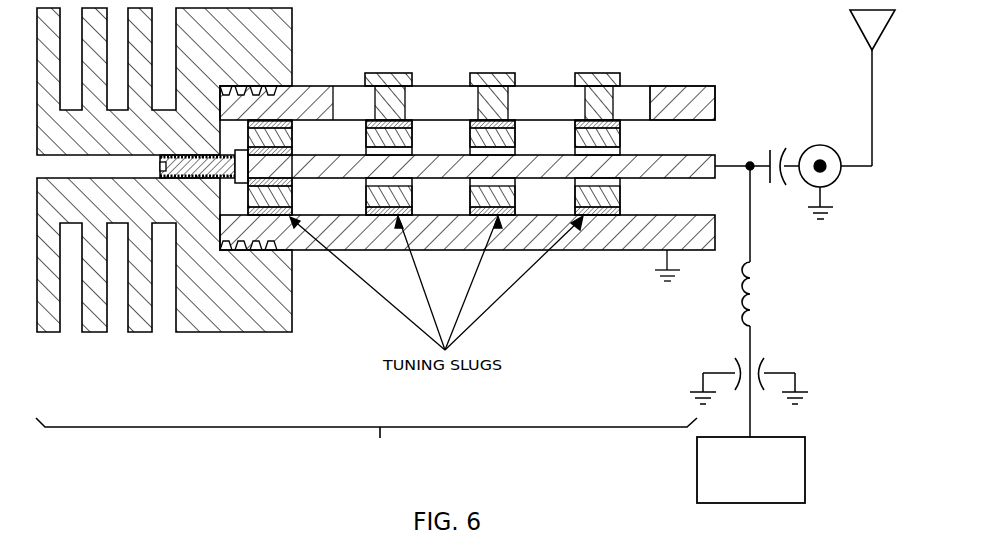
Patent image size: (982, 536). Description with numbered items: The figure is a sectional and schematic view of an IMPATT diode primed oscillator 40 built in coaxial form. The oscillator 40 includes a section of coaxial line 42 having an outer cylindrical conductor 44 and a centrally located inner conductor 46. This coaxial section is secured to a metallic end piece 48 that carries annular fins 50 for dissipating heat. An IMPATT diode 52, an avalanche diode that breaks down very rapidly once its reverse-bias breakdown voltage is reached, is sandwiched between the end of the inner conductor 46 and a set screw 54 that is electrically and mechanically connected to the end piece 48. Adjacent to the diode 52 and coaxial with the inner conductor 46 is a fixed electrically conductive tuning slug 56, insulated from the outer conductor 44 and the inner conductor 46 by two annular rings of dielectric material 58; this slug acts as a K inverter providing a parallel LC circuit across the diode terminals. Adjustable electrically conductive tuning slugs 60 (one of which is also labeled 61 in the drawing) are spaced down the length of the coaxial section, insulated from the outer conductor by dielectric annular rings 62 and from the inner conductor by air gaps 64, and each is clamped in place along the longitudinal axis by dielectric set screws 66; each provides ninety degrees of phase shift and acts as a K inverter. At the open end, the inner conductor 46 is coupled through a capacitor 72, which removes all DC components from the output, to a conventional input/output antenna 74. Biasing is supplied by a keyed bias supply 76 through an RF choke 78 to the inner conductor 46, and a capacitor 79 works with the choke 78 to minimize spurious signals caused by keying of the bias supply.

The oscillator 40 is at (366, 439).
The section of coaxial line 42 is at (488, 171).
The outer cylindrical conductor 44 is at (718, 110).
The inner conductor 46 is at (720, 168).
The metallic end piece 48 is at (182, 181).
The annular fins 50 is at (50, 333).
The IMPATT diode 52 is at (347, 126).
The set screw 54 is at (156, 163).
The fixed tuning slug 56 is at (292, 196).
The annular rings of dielectric material 58 is at (283, 152).
The adjustable tuning slugs 60 is at (517, 140).
The tuning slug 61 is at (413, 143).
The annular rings of dielectric material 62 is at (413, 213).
The air gaps 64 is at (509, 197).
The dielectric set screws 66 is at (409, 72).
The capacitor 72 is at (772, 150).
The input/output antenna 74 is at (853, 28).
The keyed bias supply 76 is at (806, 470).
The RF choke 78 is at (752, 299).
The capacitor 79 is at (764, 372).